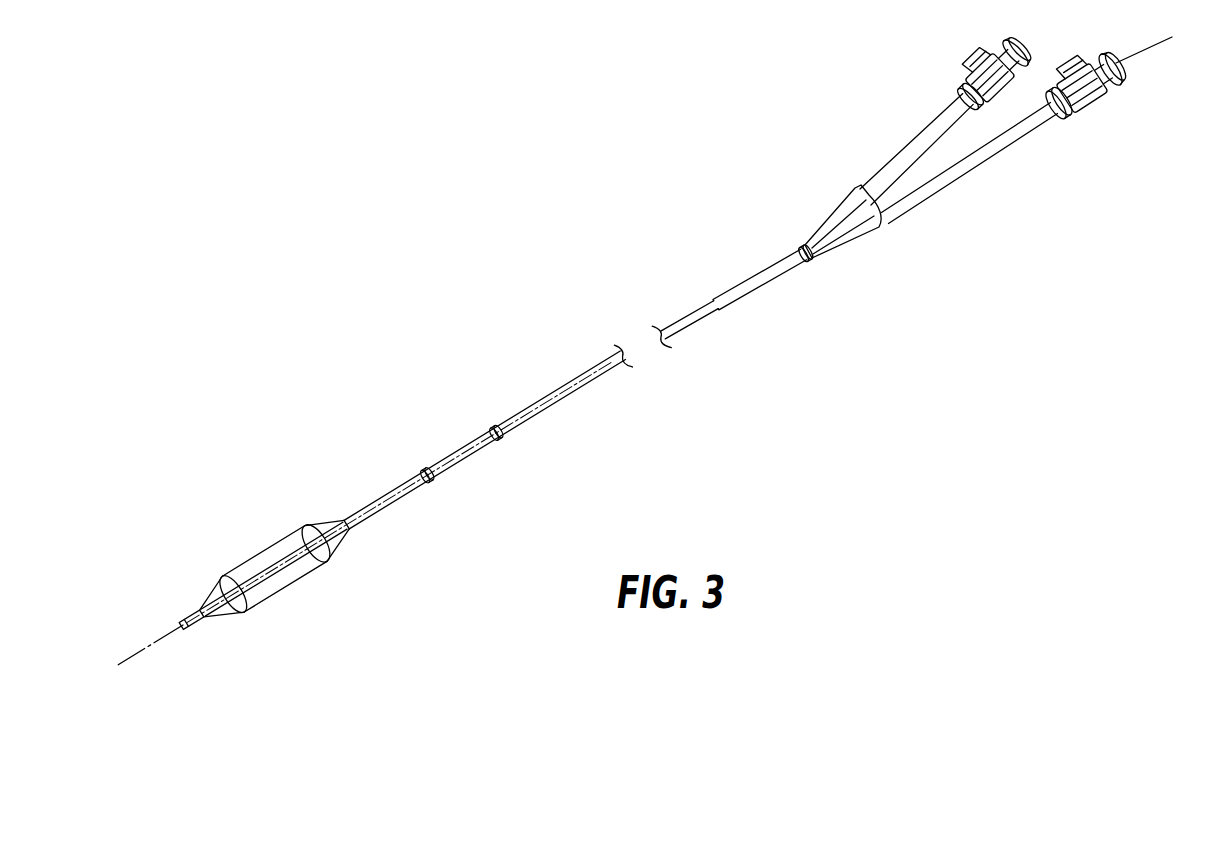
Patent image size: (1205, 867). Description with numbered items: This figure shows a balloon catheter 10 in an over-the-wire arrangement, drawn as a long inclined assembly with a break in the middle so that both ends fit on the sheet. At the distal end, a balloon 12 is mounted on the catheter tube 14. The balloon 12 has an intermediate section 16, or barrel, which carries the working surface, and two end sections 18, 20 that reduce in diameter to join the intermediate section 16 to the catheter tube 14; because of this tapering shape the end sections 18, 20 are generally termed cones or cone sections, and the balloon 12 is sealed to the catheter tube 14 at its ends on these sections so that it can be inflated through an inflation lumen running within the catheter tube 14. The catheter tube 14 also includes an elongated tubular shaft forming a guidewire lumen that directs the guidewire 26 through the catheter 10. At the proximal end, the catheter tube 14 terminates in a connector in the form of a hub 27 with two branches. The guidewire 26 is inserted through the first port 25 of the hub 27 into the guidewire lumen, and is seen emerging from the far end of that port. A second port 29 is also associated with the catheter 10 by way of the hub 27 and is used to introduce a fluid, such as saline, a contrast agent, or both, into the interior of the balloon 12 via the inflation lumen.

The catheter 10 is at (591, 325).
The balloon 12 is at (246, 555).
The catheter tube 14 is at (610, 377).
The intermediate section 16 is at (284, 537).
The end section 18 is at (329, 521).
The end section 20 is at (209, 589).
The first port 25 is at (947, 172).
The guidewire 26 is at (1145, 55).
The hub 27 is at (836, 217).
The second port 29 is at (932, 133).